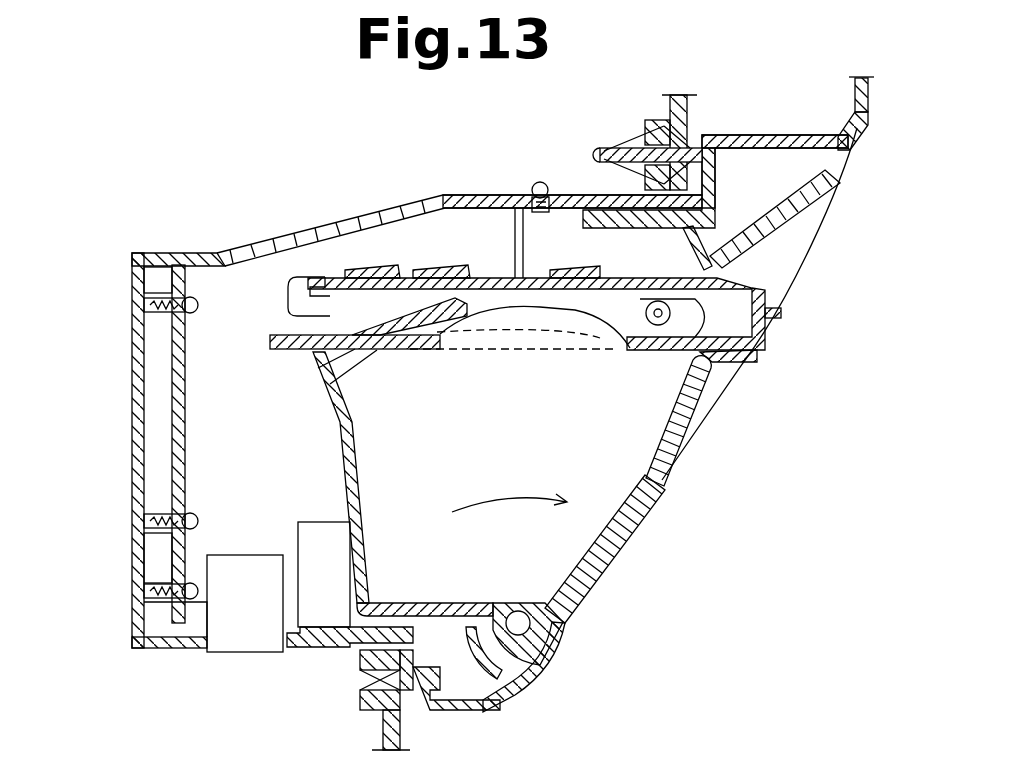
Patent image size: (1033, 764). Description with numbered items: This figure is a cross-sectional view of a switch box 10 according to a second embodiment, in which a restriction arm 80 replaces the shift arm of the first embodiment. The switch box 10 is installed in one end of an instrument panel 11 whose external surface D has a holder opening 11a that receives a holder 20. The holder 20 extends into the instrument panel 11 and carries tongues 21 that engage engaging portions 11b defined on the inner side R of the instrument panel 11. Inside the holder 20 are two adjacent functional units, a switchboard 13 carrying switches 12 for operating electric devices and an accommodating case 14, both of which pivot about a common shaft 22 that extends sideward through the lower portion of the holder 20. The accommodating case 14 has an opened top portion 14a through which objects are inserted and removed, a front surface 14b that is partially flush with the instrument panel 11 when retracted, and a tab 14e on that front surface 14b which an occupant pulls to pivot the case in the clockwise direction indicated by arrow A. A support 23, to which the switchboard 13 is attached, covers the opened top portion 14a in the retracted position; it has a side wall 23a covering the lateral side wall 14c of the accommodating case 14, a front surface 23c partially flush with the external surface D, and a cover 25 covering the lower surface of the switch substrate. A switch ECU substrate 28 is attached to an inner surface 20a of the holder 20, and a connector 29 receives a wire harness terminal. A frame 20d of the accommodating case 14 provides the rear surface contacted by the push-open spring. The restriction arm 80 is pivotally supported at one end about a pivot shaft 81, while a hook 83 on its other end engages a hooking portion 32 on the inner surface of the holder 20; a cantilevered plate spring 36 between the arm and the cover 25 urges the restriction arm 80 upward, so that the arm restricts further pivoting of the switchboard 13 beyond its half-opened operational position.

The switch box 10 is at (796, 607).
The instrument panel 11 is at (872, 95).
The holder opening 11a is at (833, 153).
The engaging portions 11b is at (688, 116).
The switches 12 is at (378, 263).
The switchboard 13 is at (500, 277).
The accommodating case 14 is at (553, 530).
The opened top portion 14a is at (359, 368).
The front surface 14b is at (583, 616).
The lateral side wall 14c is at (634, 500).
The tab 14e is at (724, 380).
The holder 20 is at (306, 228).
The inner surface 20a is at (150, 385).
The frame 20d is at (814, 227).
The tongues 21 is at (610, 148).
The common shaft 22 is at (514, 618).
The support 23 is at (782, 313).
The side wall 23a is at (318, 371).
The front surface 23c is at (776, 330).
The cover 25 is at (512, 350).
The switch electronic control unit substrate 28 is at (185, 452).
The connector 29 is at (227, 655).
The hooking portion 32 is at (583, 197).
The plate spring 36 is at (432, 335).
The restriction arm 80 is at (580, 312).
The pivot shaft 81 is at (658, 326).
The hook 83 is at (297, 293).
The arrow A is at (509, 488).
The inner side R is at (855, 93).
The external surface D is at (860, 128).